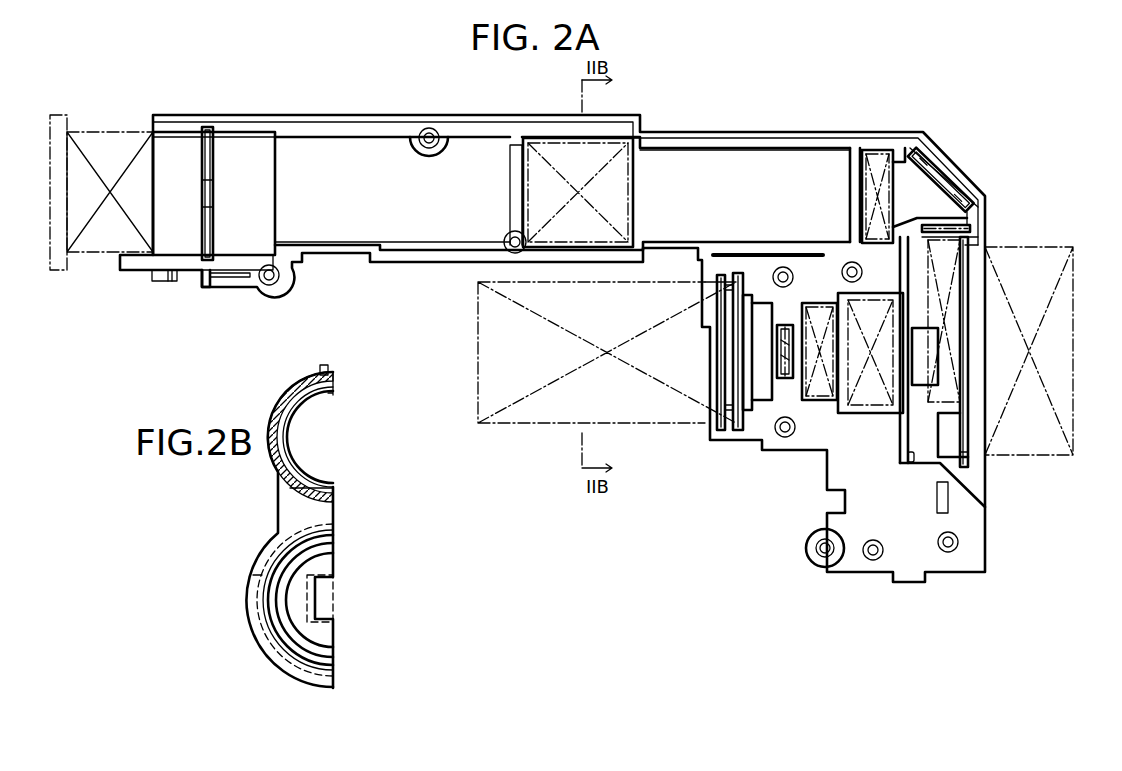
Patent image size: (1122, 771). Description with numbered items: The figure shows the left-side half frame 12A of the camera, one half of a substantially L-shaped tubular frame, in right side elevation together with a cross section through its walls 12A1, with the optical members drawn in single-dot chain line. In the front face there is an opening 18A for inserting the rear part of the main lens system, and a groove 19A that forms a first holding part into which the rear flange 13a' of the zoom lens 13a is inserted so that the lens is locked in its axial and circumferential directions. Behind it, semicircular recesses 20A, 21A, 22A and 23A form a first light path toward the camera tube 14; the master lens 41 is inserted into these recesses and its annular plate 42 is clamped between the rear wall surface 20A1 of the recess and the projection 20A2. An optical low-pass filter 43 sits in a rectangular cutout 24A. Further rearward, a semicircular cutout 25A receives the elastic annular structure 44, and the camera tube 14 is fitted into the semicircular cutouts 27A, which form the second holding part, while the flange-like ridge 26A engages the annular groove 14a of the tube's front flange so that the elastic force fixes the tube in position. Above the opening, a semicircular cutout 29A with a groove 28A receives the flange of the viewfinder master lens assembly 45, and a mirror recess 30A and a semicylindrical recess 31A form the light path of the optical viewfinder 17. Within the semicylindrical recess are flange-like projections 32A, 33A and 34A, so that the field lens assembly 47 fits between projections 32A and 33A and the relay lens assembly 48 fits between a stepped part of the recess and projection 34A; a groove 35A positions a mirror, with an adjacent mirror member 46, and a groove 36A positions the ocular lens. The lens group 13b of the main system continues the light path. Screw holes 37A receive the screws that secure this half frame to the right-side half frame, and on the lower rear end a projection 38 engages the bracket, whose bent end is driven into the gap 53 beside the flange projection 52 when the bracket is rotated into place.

In FIG. 2A, the left-side half frame 12A is at (800, 89).
In FIG. 2B, the left-side half frame 12A is at (277, 394).
In FIG. 2A, the housing wall 12A1 is at (395, 258).
In FIG. 2B, the housing wall 12A1 is at (333, 378).
In FIG. 2A, the optical viewfinder 17 is at (117, 132).
In FIG. 2A, the groove for positioning the ocular lens 36A is at (207, 128).
In FIG. 2A, the projection 38 is at (162, 282).
In FIG. 2A, the gap 53 is at (210, 290).
In FIG. 2A, the flange projection 52 is at (228, 290).
In FIG. 2A, the screw holes 37A is at (270, 288).
In FIG. 2A, the semicylindrical recess 31A is at (343, 143).
In FIG. 2A, the flange-like projection 34A is at (516, 140).
In FIG. 2A, the relay lens assembly 48 is at (603, 145).
In FIG. 2A, the flange-like projection 33A is at (853, 148).
In FIG. 2A, the field lens assembly 47 is at (870, 155).
In FIG. 2A, the flange-like projection 32A is at (903, 157).
In FIG. 2A, the groove for positioning a mirror 35A is at (925, 158).
In FIG. 2A, the mirror holder 46 is at (938, 175).
In FIG. 2A, the recess for a mirror 30A is at (945, 203).
In FIG. 2A, the semicircular cutout 29A is at (968, 220).
In FIG. 2A, the groove 28A is at (970, 228).
In FIG. 2A, the master lens assembly for the viewfinder 45 is at (968, 268).
In FIG. 2A, the groove 19A is at (962, 372).
In FIG. 2A, the projection 20A2 is at (925, 382).
In FIG. 2A, the opening 18A is at (963, 448).
In FIG. 2A, the rear flange 13a' is at (1001, 471).
In FIG. 2A, the zoom lens 13a is at (1043, 368).
In FIG. 2A, the rear wall surface 20A1 is at (912, 458).
In FIG. 2A, the semicircular recess 20A is at (927, 462).
In FIG. 2A, the annular flange or plate 42 is at (926, 511).
In FIG. 2A, the elastic annular structure 44 is at (748, 252).
In FIG. 2A, the semicircular recess 22A is at (810, 398).
In FIG. 2A, the master lens 41 is at (822, 310).
In FIG. 2A, the lens group 13b is at (868, 414).
In FIG. 2A, the optical low-pass filter 43 is at (785, 325).
In FIG. 2A, the rectangular cutout 24A is at (785, 380).
In FIG. 2B, the rectangular cutout 24A is at (317, 600).
In FIG. 2A, the semicircular recess 23A is at (758, 402).
In FIG. 2B, the semicircular recess 23A is at (324, 556).
In FIG. 2A, the semicircular cutout 25A is at (750, 412).
In FIG. 2B, the semicircular cutout 25A is at (332, 542).
In FIG. 2A, the semicircular cutouts 27A is at (745, 418).
In FIG. 2B, the semicircular cutouts 27A is at (300, 675).
In FIG. 2A, the flange-like ridge 26A is at (726, 432).
In FIG. 2B, the flange-like ridge 26A is at (326, 664).
In FIG. 2A, the annular groove 14a is at (718, 292).
In FIG. 2A, the camera tube 14 is at (527, 423).
In FIG. 2A, the semicircular recess 21A is at (838, 443).